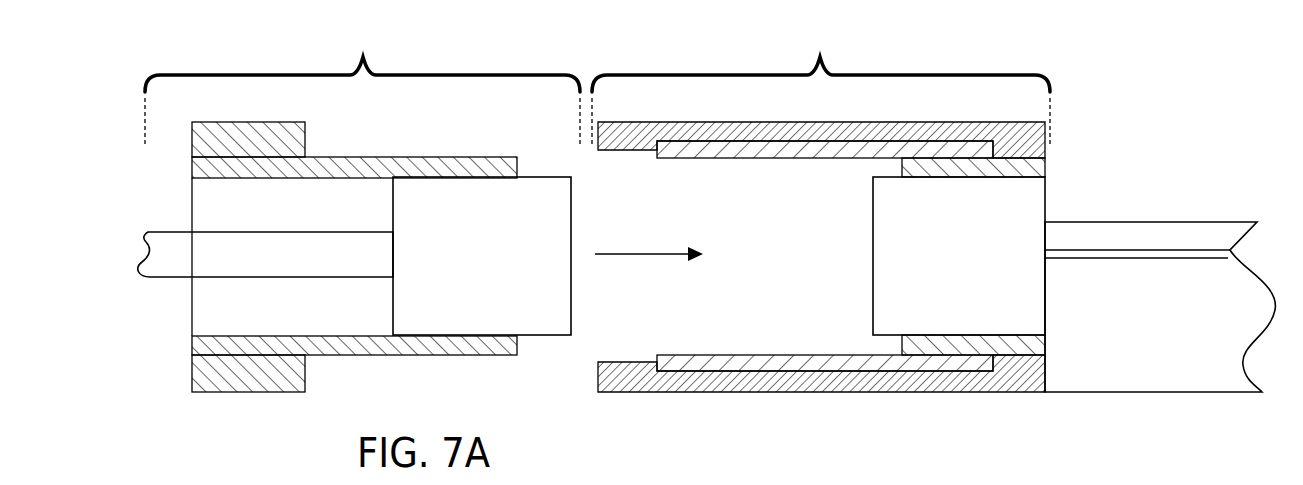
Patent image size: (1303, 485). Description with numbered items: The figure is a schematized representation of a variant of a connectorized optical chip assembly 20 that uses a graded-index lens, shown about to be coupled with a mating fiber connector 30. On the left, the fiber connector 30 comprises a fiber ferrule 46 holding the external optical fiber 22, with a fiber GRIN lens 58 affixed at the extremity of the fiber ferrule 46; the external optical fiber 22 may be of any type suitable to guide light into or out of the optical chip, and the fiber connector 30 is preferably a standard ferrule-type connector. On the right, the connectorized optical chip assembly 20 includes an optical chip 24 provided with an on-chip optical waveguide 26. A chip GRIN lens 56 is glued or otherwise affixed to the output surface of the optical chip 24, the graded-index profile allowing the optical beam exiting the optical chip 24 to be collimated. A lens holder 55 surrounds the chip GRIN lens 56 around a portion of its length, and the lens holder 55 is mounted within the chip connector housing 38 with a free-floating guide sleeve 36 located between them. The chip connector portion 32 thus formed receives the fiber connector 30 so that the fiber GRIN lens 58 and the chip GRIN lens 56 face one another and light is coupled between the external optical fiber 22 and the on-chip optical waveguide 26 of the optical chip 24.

The connectorized optical chip assembly 20 is at (1212, 112).
The external optical fiber 22 is at (170, 263).
The optical chip 24 is at (1181, 368).
The on-chip optical waveguide 26 is at (1102, 250).
The fiber connector 30 is at (362, 86).
The second connector portion 32 is at (821, 86).
The free-floating guide sleeve 36 is at (955, 362).
The chip connector housing 38 is at (857, 380).
The fiber ferrule 46 is at (212, 208).
The lens holder 55 is at (1025, 345).
The chip GRIN lens 56 is at (885, 281).
The fiber GRIN lens 58 is at (553, 220).